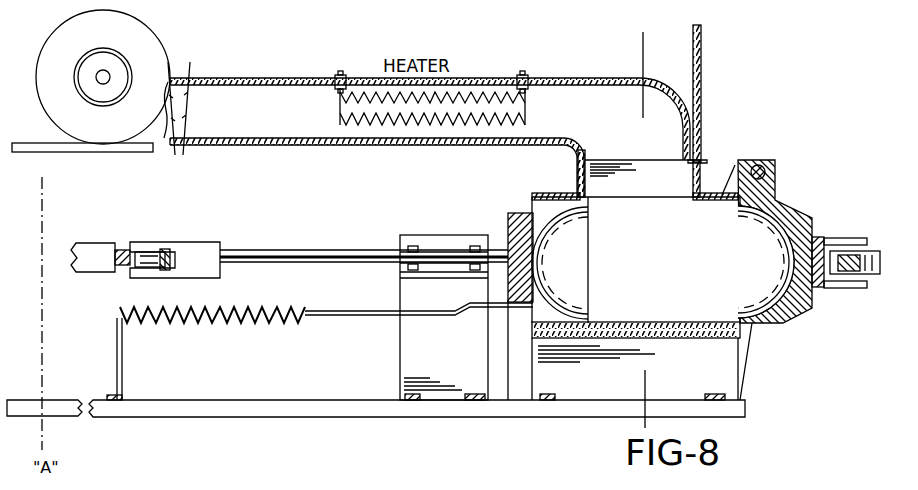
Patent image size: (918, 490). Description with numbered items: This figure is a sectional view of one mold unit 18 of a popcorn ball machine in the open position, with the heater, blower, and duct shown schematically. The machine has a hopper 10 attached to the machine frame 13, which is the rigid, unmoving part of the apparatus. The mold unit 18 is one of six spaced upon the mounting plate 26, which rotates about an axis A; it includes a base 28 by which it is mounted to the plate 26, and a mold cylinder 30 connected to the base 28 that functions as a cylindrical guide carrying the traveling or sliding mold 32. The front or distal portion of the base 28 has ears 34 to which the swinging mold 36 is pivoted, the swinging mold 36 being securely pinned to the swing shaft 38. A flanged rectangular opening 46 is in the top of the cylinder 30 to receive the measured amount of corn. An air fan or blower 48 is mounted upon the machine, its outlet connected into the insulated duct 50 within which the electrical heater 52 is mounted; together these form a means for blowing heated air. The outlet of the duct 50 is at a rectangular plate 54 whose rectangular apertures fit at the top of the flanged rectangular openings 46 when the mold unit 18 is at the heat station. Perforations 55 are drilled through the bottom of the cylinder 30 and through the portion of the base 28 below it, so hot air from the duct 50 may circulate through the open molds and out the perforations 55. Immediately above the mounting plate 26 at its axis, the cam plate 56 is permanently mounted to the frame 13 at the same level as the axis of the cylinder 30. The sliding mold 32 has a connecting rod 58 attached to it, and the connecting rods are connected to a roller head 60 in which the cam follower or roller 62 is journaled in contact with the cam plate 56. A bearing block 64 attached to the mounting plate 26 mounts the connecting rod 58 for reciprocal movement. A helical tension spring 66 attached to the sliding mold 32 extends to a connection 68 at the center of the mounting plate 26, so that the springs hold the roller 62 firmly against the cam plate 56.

The hopper 10 is at (584, 40).
The machine frame 13 is at (130, 148).
The mold unit 18 is at (814, 203).
The mounting plate 26 is at (566, 410).
The base 28 is at (701, 384).
The mold cylinder 30 is at (545, 194).
The sliding mold 32 is at (588, 257).
The ears 34 is at (735, 166).
The swinging mold 36 is at (790, 323).
The swing shaft 38 is at (776, 172).
The flanged rectangular opening 46 is at (666, 192).
The air fan or blower 48 is at (108, 41).
The insulated duct 50 is at (285, 146).
The electrical heater 52 is at (428, 127).
The rectangular plate 54 is at (580, 160).
The perforations 55 is at (692, 322).
The cam plate 56 is at (100, 249).
The connecting rod 58 is at (365, 258).
The roller head 60 is at (182, 250).
The cam follower or roller 62 is at (122, 250).
The bearing block 64 is at (451, 343).
The helical tension spring 66 is at (304, 312).
The connection 68 is at (820, 240).